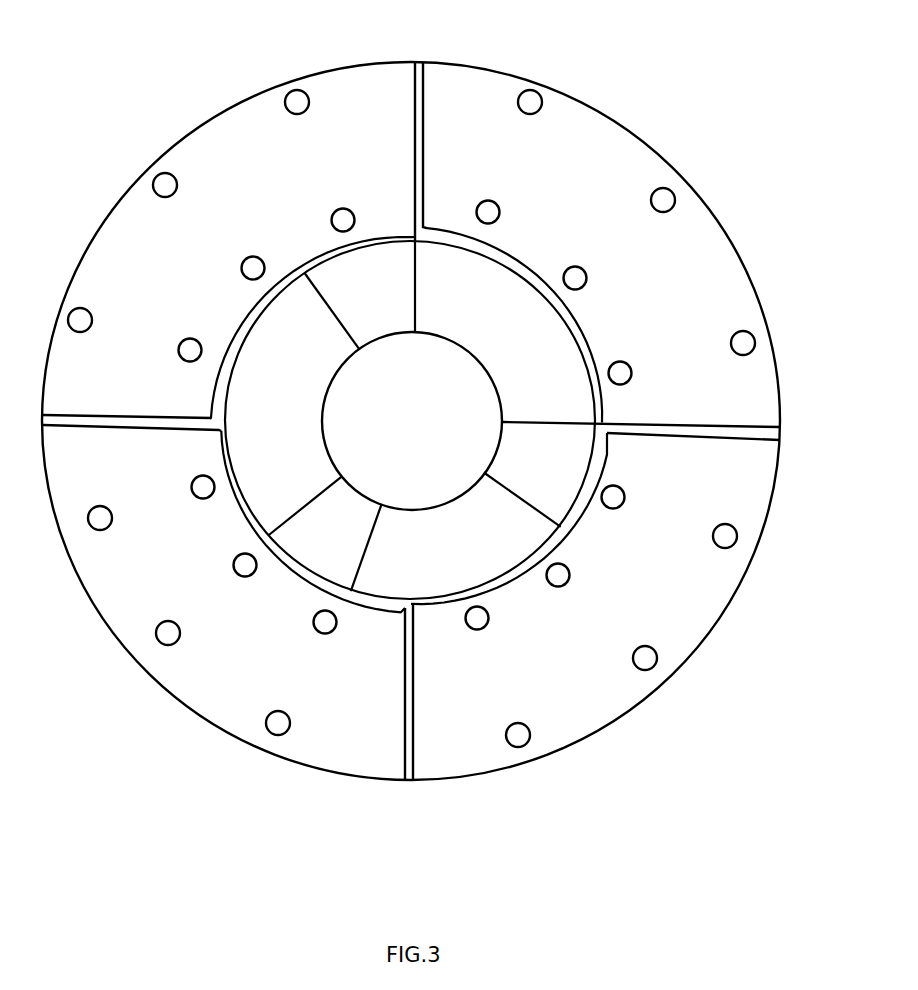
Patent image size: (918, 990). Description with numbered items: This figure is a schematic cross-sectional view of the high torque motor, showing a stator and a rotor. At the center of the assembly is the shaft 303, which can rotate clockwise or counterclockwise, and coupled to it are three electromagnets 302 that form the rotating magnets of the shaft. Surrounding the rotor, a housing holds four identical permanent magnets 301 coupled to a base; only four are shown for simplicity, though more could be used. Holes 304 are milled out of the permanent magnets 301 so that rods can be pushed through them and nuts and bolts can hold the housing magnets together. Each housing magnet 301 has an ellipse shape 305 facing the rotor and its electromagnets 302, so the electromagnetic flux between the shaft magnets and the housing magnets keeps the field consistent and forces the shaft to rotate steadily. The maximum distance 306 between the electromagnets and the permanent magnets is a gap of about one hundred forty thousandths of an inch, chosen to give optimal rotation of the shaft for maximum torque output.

The permanent magnet 301 is at (603, 160).
The electromagnet 302 is at (377, 268).
The shaft 303 is at (493, 376).
The holes 304 is at (528, 89).
The ellipse shape 305 is at (612, 442).
The maximum distance 306 is at (214, 392).